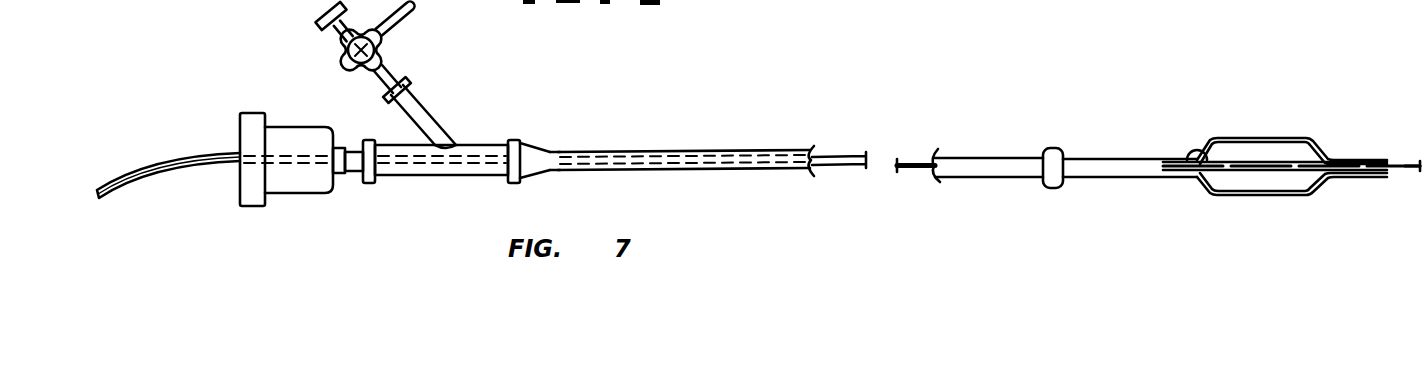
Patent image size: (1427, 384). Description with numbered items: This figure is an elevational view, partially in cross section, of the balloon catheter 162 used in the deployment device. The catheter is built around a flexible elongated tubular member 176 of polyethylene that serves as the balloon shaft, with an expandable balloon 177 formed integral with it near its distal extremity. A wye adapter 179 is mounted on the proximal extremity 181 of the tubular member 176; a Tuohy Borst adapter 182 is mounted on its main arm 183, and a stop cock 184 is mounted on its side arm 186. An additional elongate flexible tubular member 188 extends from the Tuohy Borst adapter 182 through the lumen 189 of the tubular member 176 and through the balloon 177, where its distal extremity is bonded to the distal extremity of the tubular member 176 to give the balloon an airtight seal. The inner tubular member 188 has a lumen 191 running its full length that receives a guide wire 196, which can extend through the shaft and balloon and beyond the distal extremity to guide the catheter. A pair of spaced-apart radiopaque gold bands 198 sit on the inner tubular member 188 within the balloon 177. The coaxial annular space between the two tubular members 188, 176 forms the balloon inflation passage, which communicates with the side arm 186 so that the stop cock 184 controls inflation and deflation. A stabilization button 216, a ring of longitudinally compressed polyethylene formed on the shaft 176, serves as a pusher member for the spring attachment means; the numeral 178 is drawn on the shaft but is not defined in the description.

The balloon catheter 162 is at (725, 124).
The flexible elongated tubular member 176 is at (650, 152).
The expandable balloon 177 is at (1260, 200).
The proximal shaft section 178 is at (995, 158).
The wye adapter 179 is at (477, 125).
The proximal extremity 181 is at (578, 152).
The Tuohy Borst adapter 182 is at (297, 183).
The main arm 183 is at (482, 168).
The stop cock 184 is at (388, 43).
The side arm 186 is at (437, 118).
The elongate flexible tubular member 188 is at (179, 156).
The lumen 189 is at (817, 170).
The lumen 191 is at (98, 194).
The guide wire 196 is at (1408, 172).
The radiopaque markers 198 is at (1228, 162).
The stabilization button 216 is at (1053, 148).